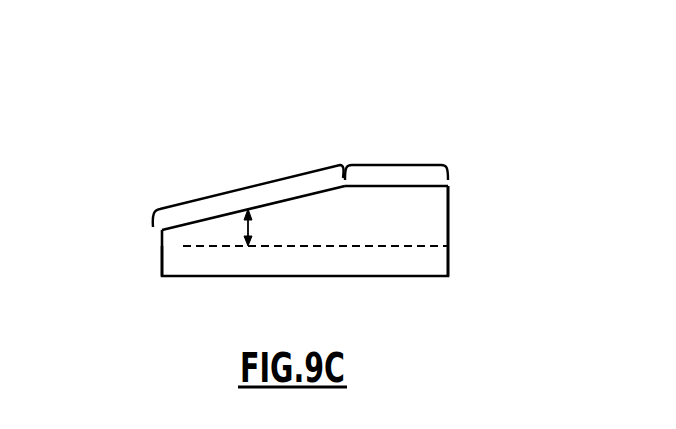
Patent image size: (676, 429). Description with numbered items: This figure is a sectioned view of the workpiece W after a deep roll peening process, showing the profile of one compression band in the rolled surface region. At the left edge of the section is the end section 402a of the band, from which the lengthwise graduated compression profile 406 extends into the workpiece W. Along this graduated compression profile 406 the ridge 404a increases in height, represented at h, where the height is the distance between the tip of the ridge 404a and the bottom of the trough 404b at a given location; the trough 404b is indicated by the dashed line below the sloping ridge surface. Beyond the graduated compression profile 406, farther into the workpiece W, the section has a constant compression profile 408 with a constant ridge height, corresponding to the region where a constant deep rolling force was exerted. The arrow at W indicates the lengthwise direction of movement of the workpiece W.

The end section 402a is at (162, 270).
The ridge 404a is at (427, 214).
The trough 404b is at (181, 248).
The lengthwise graduated compression profile 406 is at (247, 186).
The constant compression profile 408 is at (398, 163).
The height h is at (252, 228).
The workpiece W is at (150, 295).